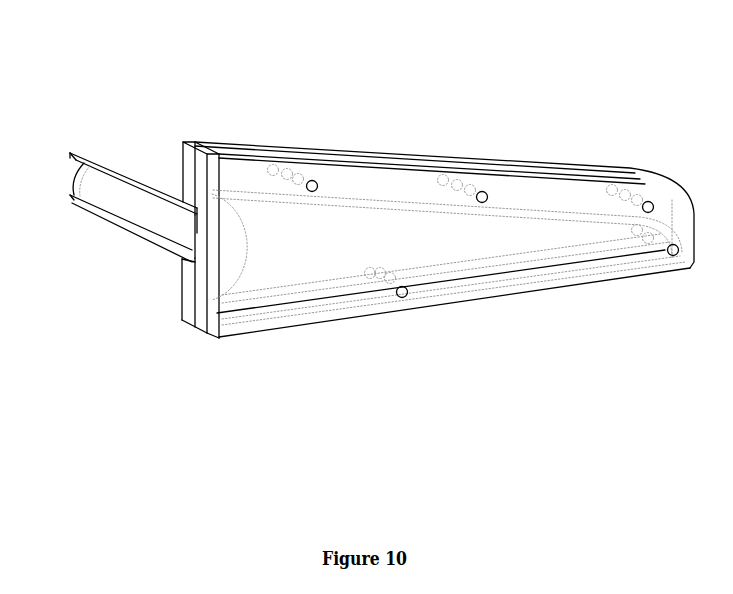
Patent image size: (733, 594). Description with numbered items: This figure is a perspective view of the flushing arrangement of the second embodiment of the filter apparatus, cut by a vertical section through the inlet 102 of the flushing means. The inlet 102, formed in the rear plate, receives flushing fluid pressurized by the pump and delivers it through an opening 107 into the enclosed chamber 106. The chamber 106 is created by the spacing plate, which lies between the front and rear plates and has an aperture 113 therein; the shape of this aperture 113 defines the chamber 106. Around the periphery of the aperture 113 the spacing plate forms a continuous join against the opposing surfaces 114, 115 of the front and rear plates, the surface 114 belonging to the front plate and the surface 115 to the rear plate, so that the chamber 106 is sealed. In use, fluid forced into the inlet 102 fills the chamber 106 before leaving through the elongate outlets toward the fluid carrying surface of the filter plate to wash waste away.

The inlet 102 is at (103, 198).
The chamber 106 is at (203, 298).
The opening 107 is at (202, 243).
The aperture 113 is at (202, 202).
The opposing surface of the front plate 114 is at (206, 190).
The opposing surface of the rear plate 115 is at (196, 190).